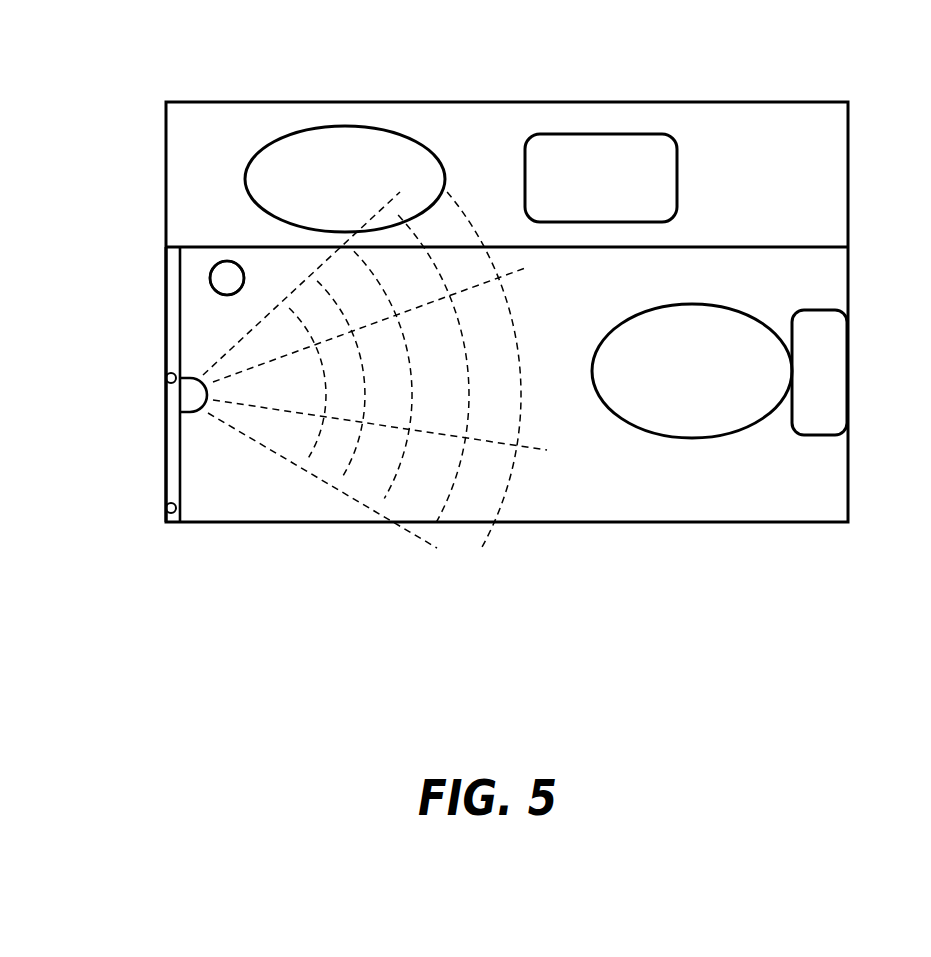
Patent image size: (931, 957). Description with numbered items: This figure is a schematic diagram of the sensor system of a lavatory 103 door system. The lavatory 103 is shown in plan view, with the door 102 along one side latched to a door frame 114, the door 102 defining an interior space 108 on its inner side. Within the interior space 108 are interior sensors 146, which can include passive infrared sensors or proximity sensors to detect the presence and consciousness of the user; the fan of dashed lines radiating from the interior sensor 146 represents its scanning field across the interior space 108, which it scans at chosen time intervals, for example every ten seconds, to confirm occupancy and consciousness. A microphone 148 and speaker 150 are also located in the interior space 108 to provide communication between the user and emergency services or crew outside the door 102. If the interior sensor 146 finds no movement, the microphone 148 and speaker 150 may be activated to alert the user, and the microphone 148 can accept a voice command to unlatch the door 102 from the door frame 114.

The door 102 is at (136, 366).
The lavatory 103 is at (483, 102).
The interior space 108 is at (624, 303).
The door frame 114 is at (166, 467).
The interior sensors 146 is at (183, 398).
The microphone 148 is at (227, 261).
The speaker 150 is at (227, 278).